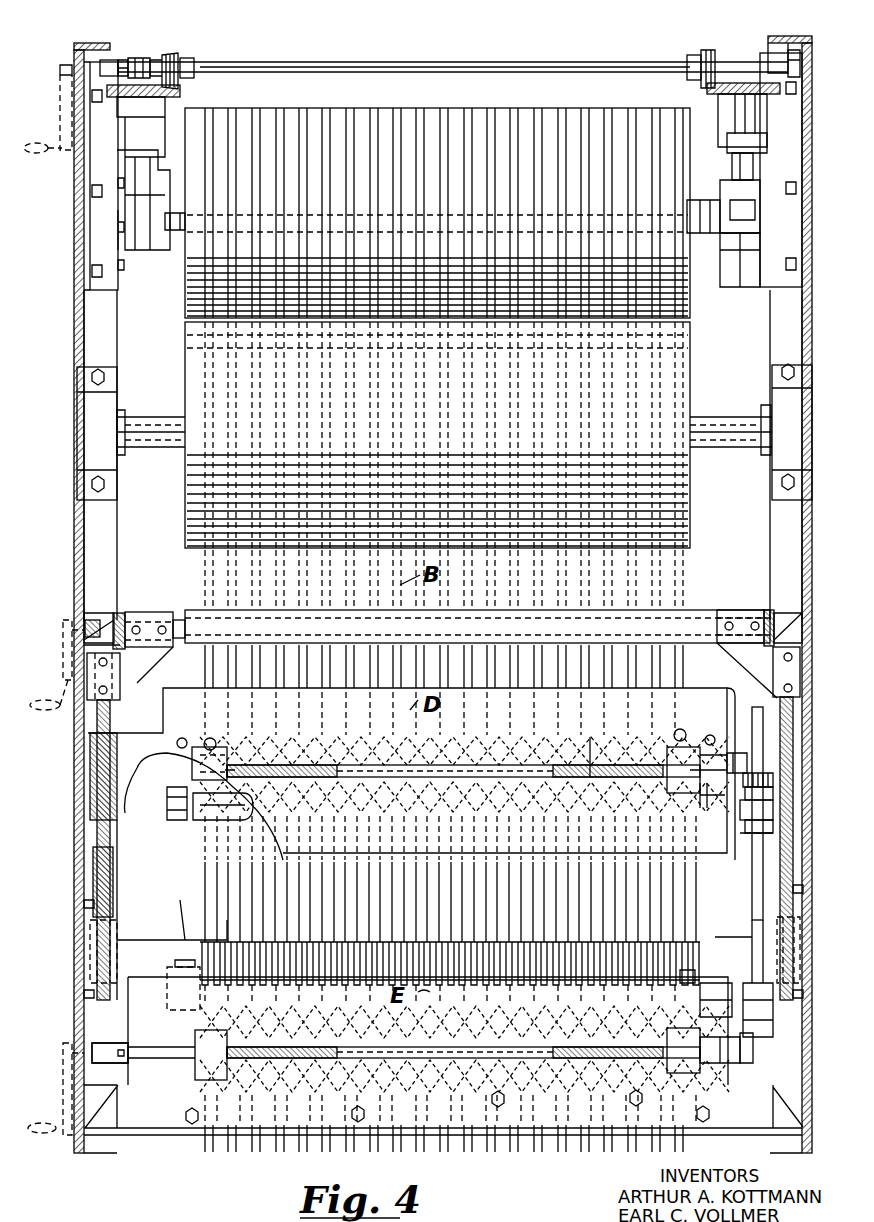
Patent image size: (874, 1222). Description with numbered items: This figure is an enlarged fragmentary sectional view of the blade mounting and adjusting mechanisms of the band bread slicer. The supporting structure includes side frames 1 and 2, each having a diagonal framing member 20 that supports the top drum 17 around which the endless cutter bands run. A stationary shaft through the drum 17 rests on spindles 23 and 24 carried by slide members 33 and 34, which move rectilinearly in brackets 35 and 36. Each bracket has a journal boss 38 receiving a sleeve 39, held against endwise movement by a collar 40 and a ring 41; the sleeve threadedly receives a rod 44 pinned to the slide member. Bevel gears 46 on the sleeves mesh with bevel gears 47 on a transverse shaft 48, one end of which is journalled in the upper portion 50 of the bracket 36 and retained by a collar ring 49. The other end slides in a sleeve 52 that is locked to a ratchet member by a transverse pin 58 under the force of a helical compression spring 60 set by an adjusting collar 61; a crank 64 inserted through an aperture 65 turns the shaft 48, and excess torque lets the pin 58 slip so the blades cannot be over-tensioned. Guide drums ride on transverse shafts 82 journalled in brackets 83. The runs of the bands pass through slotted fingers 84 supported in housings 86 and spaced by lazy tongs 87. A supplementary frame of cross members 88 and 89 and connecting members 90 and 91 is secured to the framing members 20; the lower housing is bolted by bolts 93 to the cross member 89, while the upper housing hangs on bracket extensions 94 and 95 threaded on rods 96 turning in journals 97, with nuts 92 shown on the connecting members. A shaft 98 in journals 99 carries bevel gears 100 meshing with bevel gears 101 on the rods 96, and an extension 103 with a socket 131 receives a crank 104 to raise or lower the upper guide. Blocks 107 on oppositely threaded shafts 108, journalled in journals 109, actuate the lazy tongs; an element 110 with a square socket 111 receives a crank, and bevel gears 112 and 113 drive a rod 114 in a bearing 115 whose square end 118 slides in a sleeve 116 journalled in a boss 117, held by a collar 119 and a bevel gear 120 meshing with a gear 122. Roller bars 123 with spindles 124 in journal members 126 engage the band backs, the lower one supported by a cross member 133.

The side frame 1 is at (82, 40).
The side frame 2 is at (800, 36).
The top drum 17 is at (404, 108).
The framing member 20 is at (76, 553).
The spindle 23 is at (175, 230).
The spindle 24 is at (714, 233).
The slide member 33 is at (146, 245).
The slide member 34 is at (750, 258).
The bracket 35 is at (95, 239).
The bracket 36 is at (780, 214).
The journal boss 38 is at (729, 122).
The sleeve 39 is at (750, 140).
The collar 40 is at (178, 90).
The ring 41 is at (735, 144).
The rod 44 is at (735, 180).
The bevel gear 46 is at (712, 80).
The bevel gear 47 is at (196, 58).
The shaft 48 is at (470, 62).
The collar ring 49 is at (774, 35).
The upper portion of bracket 50 is at (800, 50).
The sleeve 52 is at (124, 60).
The transverse pin 58 is at (106, 60).
The helical compression spring 60 is at (178, 52).
The adjusting collar 61 is at (148, 58).
The crank 64 is at (51, 153).
The aperture 65 is at (63, 67).
The transverse shaft 82 is at (720, 450).
The bracket 83 is at (92, 408).
The slotted finger 84 is at (376, 930).
The housing 86 is at (614, 860).
The lazy tongs 87 is at (530, 812).
The cross member 88 is at (702, 608).
The cross member 89 is at (148, 1135).
The connecting member 90 is at (87, 874).
The connecting member 91 is at (803, 882).
The nut 92 is at (85, 990).
The bolt 93 is at (192, 1120).
The bracket extension 94 is at (135, 740).
The bracket extension 95 is at (748, 707).
The threaded rod 96 is at (95, 832).
The journal 97 is at (90, 673).
The shaft 98 is at (180, 620).
The journal 99 is at (150, 612).
The bevel gear 100 is at (120, 613).
The bevel gear 101 is at (94, 615).
The extension 103 is at (92, 616).
The crank 104 is at (63, 708).
The block 107 is at (200, 756).
The shaft 108 is at (590, 736).
The journal 109 is at (713, 1063).
The element 110 is at (95, 1044).
The square socket 111 is at (63, 1054).
The bevel gear 112 is at (745, 1065).
The bevel gear 113 is at (773, 1043).
The rod 114 is at (752, 922).
The bearing 115 is at (725, 980).
The sleeve 116 is at (750, 840).
The boss 117 is at (778, 806).
The square end 118 is at (766, 747).
The collar 119 is at (745, 835).
The bevel gear 120 is at (776, 781).
The gear 122 is at (733, 753).
The roller bar 123 is at (225, 780).
The spindle 124 is at (167, 811).
The journal member 126 is at (195, 820).
The socket 131 is at (63, 624).
The cross member 133 is at (181, 918).